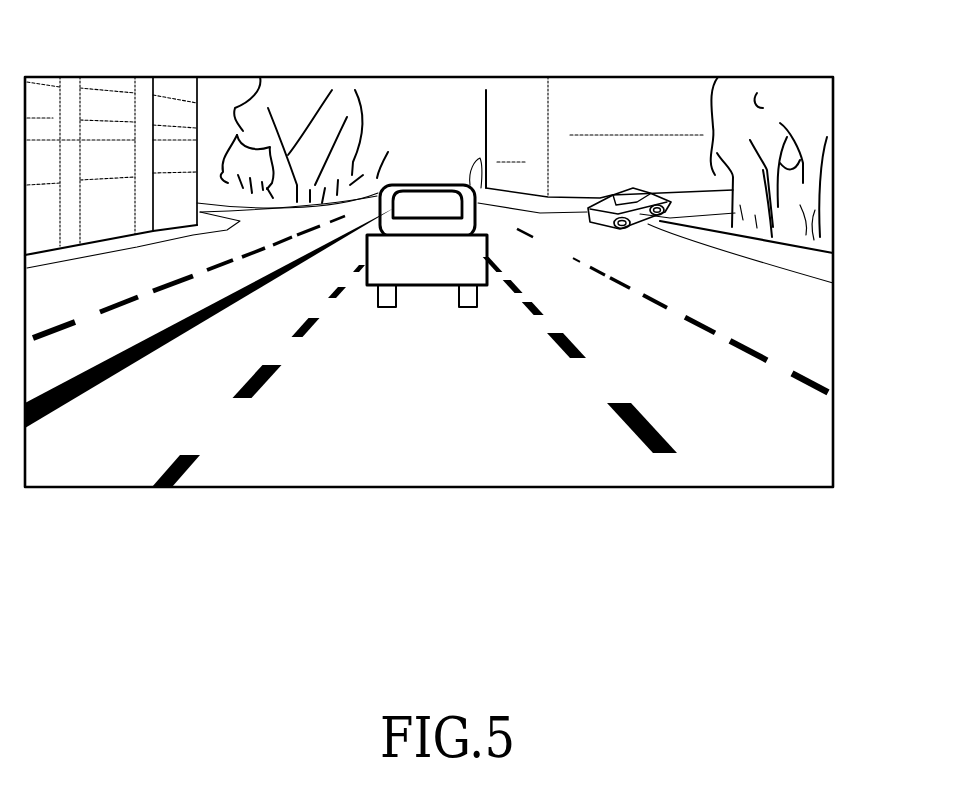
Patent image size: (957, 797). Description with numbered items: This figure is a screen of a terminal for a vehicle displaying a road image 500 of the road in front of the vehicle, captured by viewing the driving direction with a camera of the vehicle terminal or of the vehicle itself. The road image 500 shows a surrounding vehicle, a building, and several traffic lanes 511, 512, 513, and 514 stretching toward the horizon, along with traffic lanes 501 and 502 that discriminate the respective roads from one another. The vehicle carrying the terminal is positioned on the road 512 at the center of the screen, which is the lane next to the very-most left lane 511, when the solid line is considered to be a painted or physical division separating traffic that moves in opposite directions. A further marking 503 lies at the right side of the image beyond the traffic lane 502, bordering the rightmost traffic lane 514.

The road image 500 is at (435, 77).
The traffic lane 501 is at (253, 398).
The traffic lane 502 is at (565, 350).
The road edge line 503 is at (752, 357).
The traffic lane 511 is at (88, 457).
The road 512 is at (390, 443).
The traffic lane 513 is at (745, 418).
The traffic lane 514 is at (798, 322).